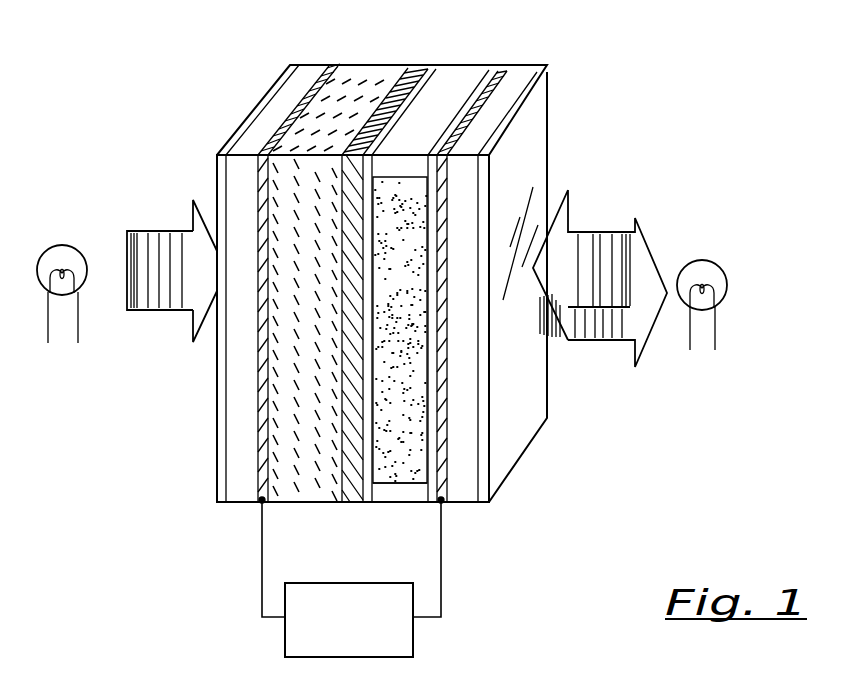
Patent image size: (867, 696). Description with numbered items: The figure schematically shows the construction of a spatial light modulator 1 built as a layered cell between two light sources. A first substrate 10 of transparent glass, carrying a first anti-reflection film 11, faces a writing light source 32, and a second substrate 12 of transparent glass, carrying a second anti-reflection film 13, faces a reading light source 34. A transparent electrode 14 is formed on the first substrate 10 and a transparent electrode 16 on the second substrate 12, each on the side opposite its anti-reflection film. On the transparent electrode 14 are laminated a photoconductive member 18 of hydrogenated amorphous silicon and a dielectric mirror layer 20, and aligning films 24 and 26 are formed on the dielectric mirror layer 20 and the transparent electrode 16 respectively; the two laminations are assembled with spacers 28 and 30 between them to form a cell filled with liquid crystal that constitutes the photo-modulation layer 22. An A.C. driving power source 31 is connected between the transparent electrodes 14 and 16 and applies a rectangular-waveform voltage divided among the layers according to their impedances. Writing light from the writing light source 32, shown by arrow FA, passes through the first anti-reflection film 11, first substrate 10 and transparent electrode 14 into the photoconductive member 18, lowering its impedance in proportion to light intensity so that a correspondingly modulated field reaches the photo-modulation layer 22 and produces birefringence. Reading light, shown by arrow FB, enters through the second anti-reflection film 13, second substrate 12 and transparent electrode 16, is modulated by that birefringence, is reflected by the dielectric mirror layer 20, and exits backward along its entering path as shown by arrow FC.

The spatial light modulator 1 is at (681, 28).
The first substrate 10 is at (233, 460).
The first anti-reflection film 11 is at (222, 410).
The second substrate 12 is at (467, 508).
The second anti-reflection film 13 is at (520, 437).
The transparent electrode 14 is at (258, 487).
The transparent electrode 16 is at (443, 493).
The photoconductive member 18 is at (363, 68).
The dielectric mirror layer 20 is at (418, 68).
The photo-modulation layer 22 is at (403, 459).
The aligning film 24 is at (432, 72).
The aligning film 26 is at (495, 72).
The spacer 28 is at (462, 75).
The spacer 30 is at (388, 497).
The A.C. driving power source 31 is at (413, 640).
The writing light source 32 is at (72, 247).
The reading light source 34 is at (712, 268).
The arrow indicating writing light FA is at (163, 238).
The arrow indicating reading light FB is at (598, 237).
The arrow indicating outputted reading light FC is at (603, 340).